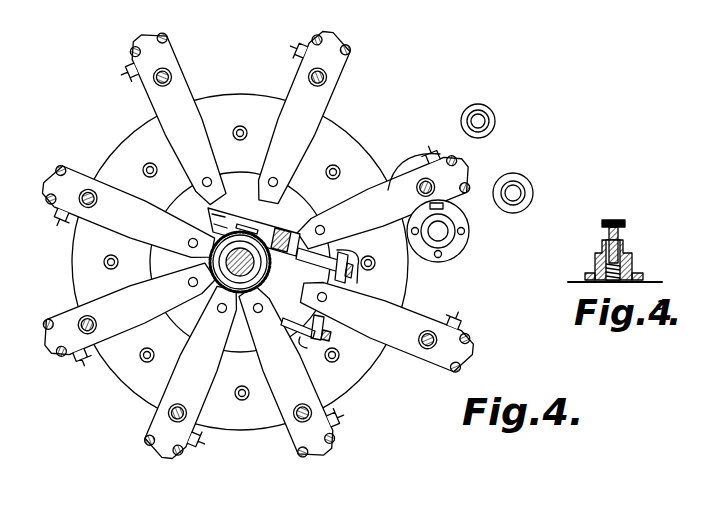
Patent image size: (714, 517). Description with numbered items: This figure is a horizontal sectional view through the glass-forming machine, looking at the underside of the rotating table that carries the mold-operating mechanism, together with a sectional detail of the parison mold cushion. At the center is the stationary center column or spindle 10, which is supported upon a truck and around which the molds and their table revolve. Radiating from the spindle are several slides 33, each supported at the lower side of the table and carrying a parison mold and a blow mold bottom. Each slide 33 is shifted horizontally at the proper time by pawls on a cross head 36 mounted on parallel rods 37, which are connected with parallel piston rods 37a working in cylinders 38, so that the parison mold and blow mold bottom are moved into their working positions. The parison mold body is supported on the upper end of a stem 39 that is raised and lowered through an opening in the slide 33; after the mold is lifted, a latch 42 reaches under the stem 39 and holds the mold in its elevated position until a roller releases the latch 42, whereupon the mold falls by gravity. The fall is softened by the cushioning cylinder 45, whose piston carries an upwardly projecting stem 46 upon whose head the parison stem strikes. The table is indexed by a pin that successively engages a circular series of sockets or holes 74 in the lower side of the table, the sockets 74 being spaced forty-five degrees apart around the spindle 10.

In FIG. 4, the stationary center column or spindle 10 is at (240, 250).
In FIG. 4, the slide 33 is at (386, 322).
In FIG. 4, the cross head 36 is at (96, 177).
In FIG. 4, the parallel rods 37 is at (331, 247).
In FIG. 4, the parallel piston rods 37a is at (284, 232).
In FIG. 4, the cylinders 38 is at (303, 238).
In FIG. 4, the stem 39 is at (468, 331).
In FIG. 4, the latch 42 is at (460, 316).
In FIG. 4A, the cushioning cylinder 45 is at (632, 274).
In FIG. 4, the upwardly projecting stem 46 is at (434, 238).
In FIG. 4A, the upwardly projecting stem 46 is at (616, 221).
In FIG. 4, the sockets or holes 74 is at (147, 357).